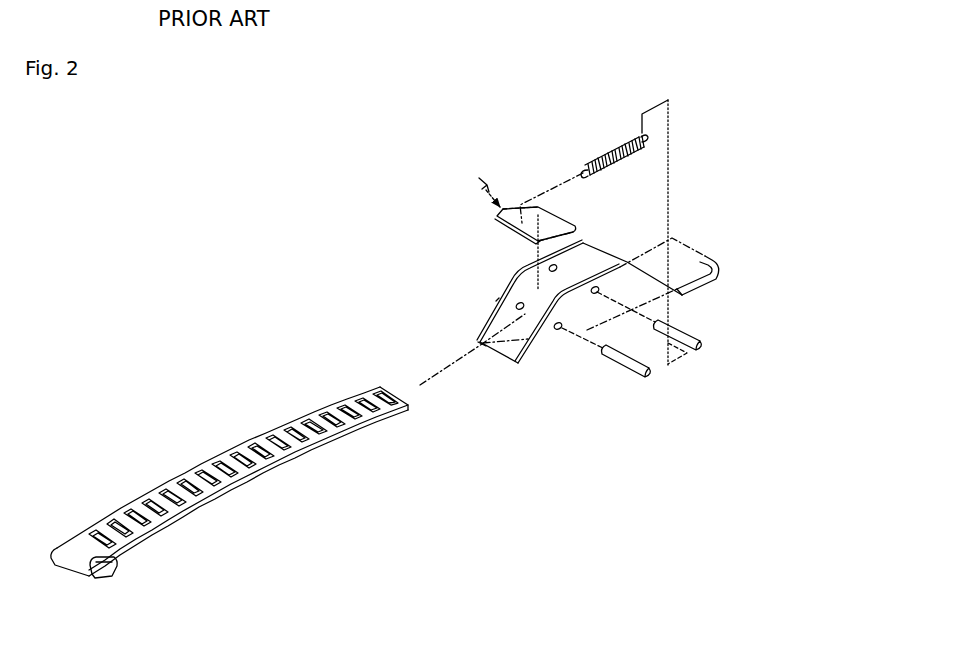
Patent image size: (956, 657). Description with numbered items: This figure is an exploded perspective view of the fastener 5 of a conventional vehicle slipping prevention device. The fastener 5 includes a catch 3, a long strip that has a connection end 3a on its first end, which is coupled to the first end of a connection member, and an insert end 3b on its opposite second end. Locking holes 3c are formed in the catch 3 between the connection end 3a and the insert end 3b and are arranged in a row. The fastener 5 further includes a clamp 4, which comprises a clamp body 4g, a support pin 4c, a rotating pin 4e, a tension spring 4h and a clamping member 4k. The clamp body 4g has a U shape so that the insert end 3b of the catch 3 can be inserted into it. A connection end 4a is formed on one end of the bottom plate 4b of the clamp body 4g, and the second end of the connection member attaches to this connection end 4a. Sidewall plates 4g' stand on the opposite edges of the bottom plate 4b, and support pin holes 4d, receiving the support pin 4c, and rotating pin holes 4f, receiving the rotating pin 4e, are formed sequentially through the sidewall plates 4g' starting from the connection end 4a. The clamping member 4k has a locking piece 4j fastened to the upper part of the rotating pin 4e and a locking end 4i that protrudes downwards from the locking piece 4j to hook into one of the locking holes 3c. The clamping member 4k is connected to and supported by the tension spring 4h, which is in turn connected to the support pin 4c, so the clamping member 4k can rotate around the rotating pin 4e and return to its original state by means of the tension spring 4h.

The catch 3 is at (222, 437).
The connection end 3a is at (107, 572).
The insert end 3b is at (396, 392).
The locking holes 3c is at (335, 400).
The clamp 4 is at (706, 238).
The connection end 4a is at (703, 285).
The bottom plate 4b is at (500, 352).
The support pin 4c is at (702, 347).
The support pin holes 4d is at (522, 272).
The rotating pin 4e is at (652, 373).
The rotating pin holes 4f is at (561, 330).
The clamp body 4g is at (455, 279).
The sidewall plates 4g' is at (465, 325).
The tension spring 4h is at (615, 150).
The locking end 4i is at (563, 219).
The locking piece 4j is at (497, 218).
The clamping member 4k is at (485, 180).
The fastener 5 is at (335, 178).